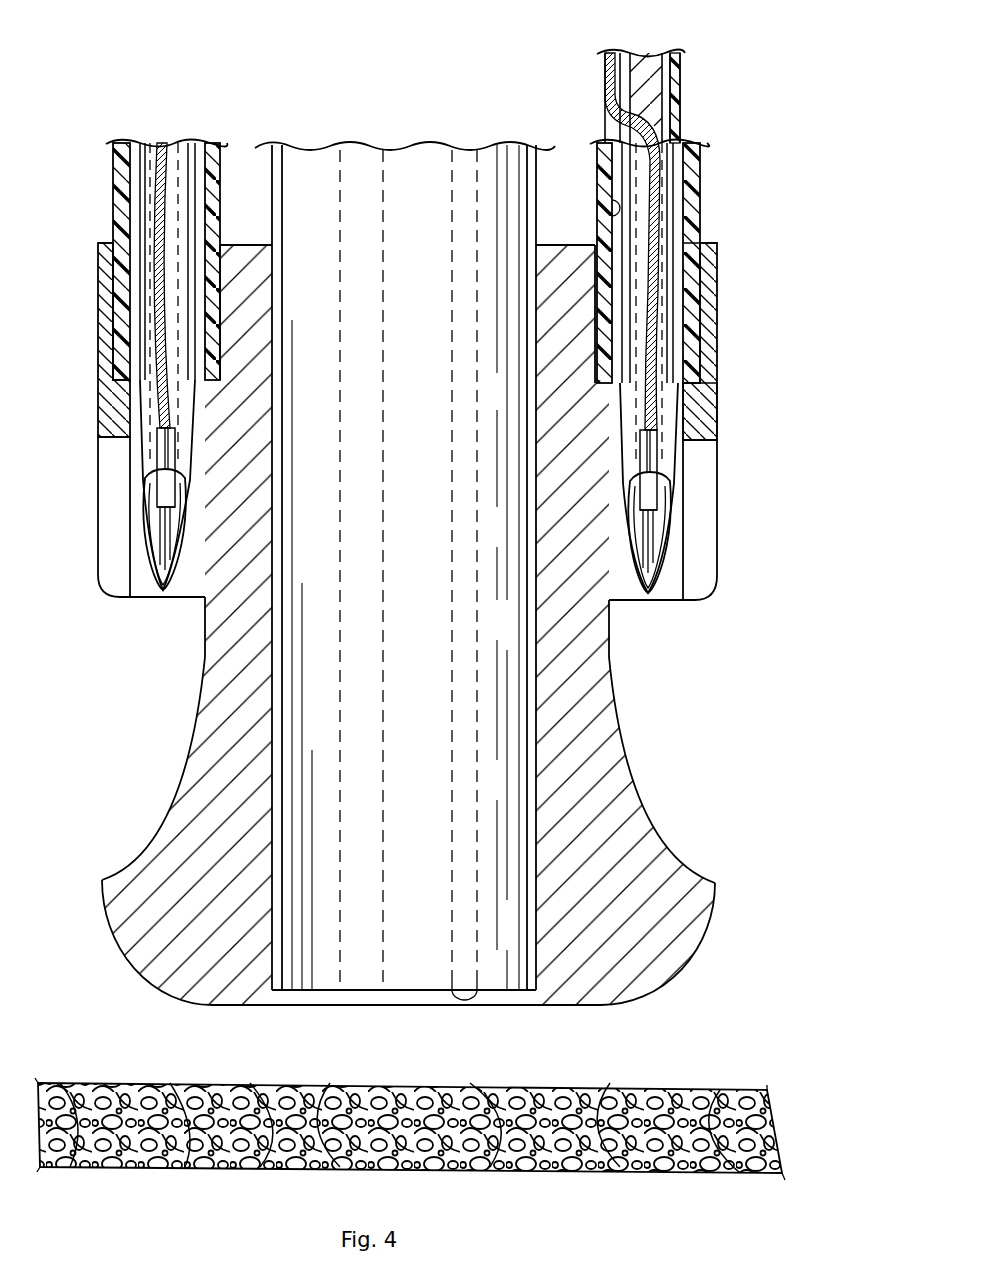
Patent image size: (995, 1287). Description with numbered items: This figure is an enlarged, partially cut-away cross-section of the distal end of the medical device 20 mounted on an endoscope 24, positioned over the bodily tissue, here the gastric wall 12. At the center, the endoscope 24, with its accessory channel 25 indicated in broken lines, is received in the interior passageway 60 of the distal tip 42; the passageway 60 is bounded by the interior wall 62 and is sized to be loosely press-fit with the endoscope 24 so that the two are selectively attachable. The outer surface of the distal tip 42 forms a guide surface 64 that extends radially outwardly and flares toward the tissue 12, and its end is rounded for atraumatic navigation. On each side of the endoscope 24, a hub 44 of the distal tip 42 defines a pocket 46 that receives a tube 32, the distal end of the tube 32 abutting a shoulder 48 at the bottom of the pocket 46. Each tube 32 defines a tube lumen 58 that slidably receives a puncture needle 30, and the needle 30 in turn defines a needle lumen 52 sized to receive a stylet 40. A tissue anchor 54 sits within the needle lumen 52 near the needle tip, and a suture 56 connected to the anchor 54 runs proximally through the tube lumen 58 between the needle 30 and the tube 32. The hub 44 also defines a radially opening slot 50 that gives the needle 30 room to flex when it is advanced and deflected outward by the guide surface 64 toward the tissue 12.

The gastric wall 12 is at (243, 1155).
The medical device 20 is at (212, 58).
The endoscope 24 is at (420, 160).
The accessory channel 25 is at (383, 900).
The puncture needle 30 is at (677, 70).
The tube 32 is at (120, 190).
The stylet 40 is at (150, 228).
The distal tip 42 is at (185, 853).
The hub 44 is at (98, 378).
The pocket 46 is at (700, 277).
The shoulder 48 is at (693, 395).
The slot 50 is at (697, 525).
The needle lumen 52 is at (667, 88).
The tissue anchor 54 is at (650, 530).
The suture 56 is at (660, 203).
The tube lumen 58 is at (608, 222).
The interior passageway 60 is at (275, 997).
The interior wall 62 is at (275, 685).
The guide surface 64 is at (190, 752).